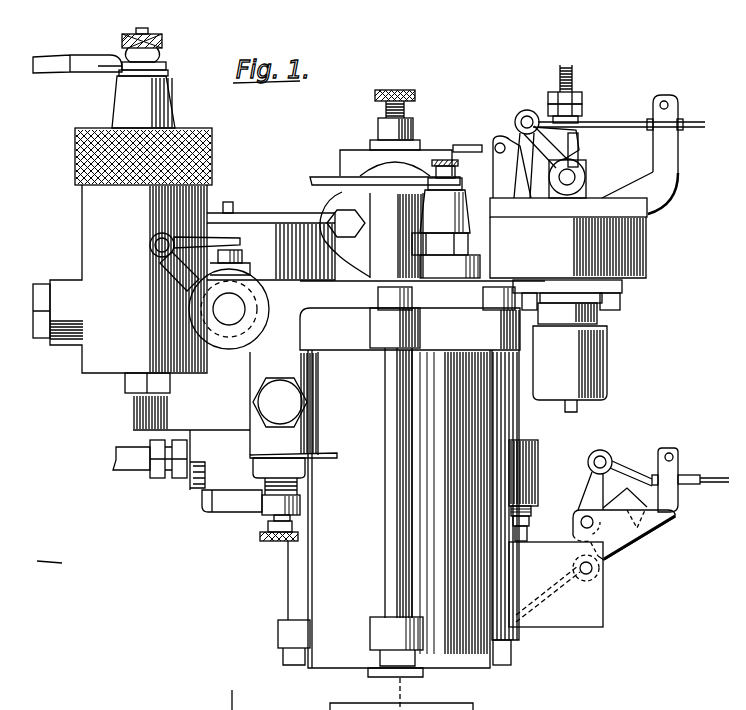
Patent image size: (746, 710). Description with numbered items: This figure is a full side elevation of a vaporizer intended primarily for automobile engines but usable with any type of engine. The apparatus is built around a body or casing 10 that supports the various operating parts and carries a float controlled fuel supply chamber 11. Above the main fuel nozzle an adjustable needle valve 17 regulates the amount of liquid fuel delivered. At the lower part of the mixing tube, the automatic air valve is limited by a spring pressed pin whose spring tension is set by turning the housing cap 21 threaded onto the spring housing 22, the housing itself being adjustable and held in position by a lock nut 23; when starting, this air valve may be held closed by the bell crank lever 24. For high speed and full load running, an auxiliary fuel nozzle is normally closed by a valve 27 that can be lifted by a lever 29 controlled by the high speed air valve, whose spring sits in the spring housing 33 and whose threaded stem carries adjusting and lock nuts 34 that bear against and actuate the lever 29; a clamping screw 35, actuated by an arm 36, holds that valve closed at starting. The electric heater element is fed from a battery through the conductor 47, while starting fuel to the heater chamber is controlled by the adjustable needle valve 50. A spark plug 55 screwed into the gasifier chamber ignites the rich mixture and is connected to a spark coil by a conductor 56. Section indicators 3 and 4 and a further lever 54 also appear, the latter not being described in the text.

The section line 3 is at (393, 691).
The section line 4 is at (225, 695).
The body or casing 10 is at (437, 434).
The float controlled fuel supply chamber 11 is at (222, 400).
The adjustable needle valve 17 is at (384, 104).
The housing cap 21 is at (537, 449).
The spring housing 22 is at (530, 517).
The lock nut 23 is at (530, 533).
The bell crank lever 24 is at (592, 483).
The valve 27 is at (455, 160).
The lever 29 is at (512, 140).
The spring housing 33 is at (567, 346).
The adjusting and lock nuts 34 is at (582, 94).
The clamping screw 35 is at (586, 171).
The arm 36 is at (527, 110).
The conductor 47 is at (52, 63).
The adjustable needle valve 50 is at (267, 524).
The lever 54 is at (180, 265).
The spark plug 55 is at (447, 213).
The conductor 56 is at (313, 174).